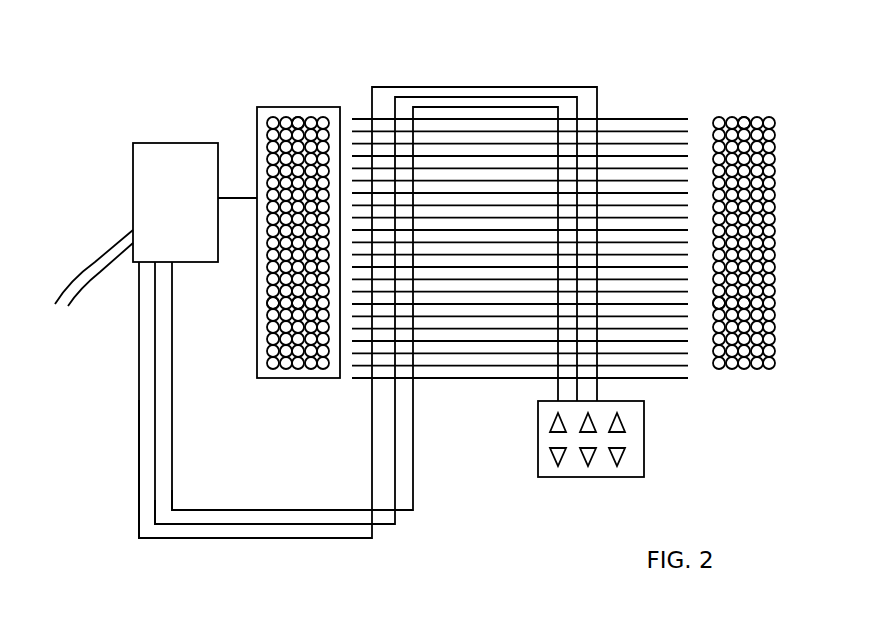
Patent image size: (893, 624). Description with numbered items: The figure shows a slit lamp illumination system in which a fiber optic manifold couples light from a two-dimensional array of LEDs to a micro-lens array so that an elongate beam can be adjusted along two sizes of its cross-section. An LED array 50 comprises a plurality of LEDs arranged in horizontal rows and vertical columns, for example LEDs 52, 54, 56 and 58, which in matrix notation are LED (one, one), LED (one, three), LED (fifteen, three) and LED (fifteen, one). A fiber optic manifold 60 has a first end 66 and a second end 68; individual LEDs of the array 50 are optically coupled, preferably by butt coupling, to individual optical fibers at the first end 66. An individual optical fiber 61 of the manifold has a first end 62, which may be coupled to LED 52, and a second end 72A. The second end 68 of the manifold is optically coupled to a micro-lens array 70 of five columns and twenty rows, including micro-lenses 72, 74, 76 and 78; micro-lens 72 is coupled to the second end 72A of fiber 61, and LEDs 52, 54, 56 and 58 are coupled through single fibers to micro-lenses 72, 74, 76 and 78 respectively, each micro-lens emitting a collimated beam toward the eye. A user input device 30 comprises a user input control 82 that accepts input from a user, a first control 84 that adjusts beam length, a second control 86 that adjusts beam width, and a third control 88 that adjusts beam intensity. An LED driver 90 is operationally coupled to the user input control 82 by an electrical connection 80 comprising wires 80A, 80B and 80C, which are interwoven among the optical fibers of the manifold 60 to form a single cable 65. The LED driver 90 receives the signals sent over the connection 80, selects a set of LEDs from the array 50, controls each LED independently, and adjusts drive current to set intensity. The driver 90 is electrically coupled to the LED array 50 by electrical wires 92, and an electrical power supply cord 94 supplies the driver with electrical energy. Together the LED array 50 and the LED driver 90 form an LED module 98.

The LED module 98 is at (203, 92).
The LED driver 90 is at (133, 172).
The electrical wires 92 is at (237, 198).
The electrical power supply cord 94 is at (92, 253).
The LED array 50 is at (295, 378).
The LED 52 is at (272, 122).
The LED 54 is at (298, 120).
The LED 56 is at (293, 310).
The LED 58 is at (275, 302).
The fiber optic manifold 60 is at (396, 66).
The optical fiber 61 is at (627, 119).
The first end of optical fiber 62 is at (360, 119).
The single cable 65 is at (477, 70).
The first end of fiber optic manifold 66 is at (352, 378).
The second end of fiber optic manifold 68 is at (688, 378).
The micro-lens array 70 is at (800, 370).
The micro-lens 72 is at (720, 121).
The second end of optical fiber 72A is at (688, 119).
The micro-lens 74 is at (745, 121).
The micro-lens 76 is at (745, 300).
The micro-lens 78 is at (717, 302).
The electrical connection 80 is at (139, 437).
The wire 80A is at (139, 493).
The wire 80B is at (150, 521).
The wire 80C is at (229, 510).
The user input device 30 is at (638, 432).
The user input control 82 is at (538, 417).
The first control 84 is at (545, 457).
The second control 86 is at (582, 458).
The third control 88 is at (625, 460).